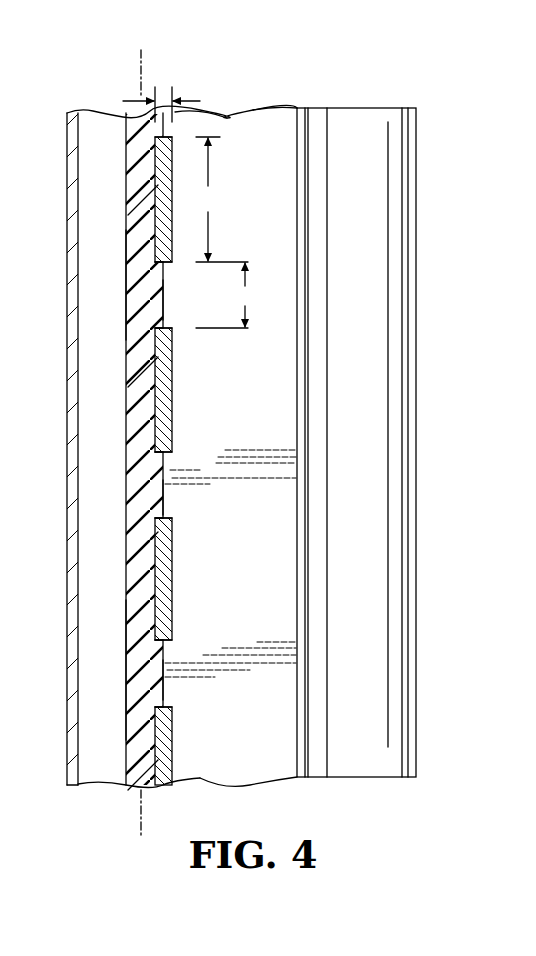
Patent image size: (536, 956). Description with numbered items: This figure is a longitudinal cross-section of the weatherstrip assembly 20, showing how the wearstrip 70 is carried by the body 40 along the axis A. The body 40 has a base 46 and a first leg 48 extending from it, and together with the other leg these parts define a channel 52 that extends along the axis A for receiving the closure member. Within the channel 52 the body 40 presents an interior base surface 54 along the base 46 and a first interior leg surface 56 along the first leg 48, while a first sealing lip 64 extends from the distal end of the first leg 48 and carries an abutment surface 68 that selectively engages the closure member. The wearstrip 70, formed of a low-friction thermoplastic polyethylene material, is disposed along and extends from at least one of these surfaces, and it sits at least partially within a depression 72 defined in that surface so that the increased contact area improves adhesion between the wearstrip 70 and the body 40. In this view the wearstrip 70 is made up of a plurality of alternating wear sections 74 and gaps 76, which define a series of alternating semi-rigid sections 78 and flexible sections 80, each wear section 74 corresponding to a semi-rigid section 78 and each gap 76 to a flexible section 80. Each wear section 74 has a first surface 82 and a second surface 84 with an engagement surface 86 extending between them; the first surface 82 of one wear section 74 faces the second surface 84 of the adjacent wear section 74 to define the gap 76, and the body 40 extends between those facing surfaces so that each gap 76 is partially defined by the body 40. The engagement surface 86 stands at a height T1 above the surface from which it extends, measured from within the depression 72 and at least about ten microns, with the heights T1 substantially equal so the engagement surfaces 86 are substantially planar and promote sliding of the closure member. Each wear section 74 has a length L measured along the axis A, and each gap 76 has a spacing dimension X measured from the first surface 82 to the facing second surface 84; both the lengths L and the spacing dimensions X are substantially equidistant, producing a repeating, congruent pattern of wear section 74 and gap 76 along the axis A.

The weatherstrip assembly 20 is at (389, 418).
The body 40 is at (120, 123).
The base 46 is at (120, 781).
The first leg 48 is at (280, 111).
The channel 52 is at (237, 131).
The interior base surface 54 is at (166, 473).
The first interior leg surface 56 is at (280, 768).
The first sealing lip 64 is at (367, 118).
The abutment surface 68 is at (367, 227).
The wearstrip 70 is at (134, 227).
The depression 72 is at (152, 130).
The wear section 74 is at (156, 236).
The gap 76 is at (180, 450).
The semi-rigid section 78 is at (149, 186).
The flexible section 80 is at (154, 298).
The first surface 82 is at (165, 264).
The second surface 84 is at (164, 136).
The engagement surface 86 is at (173, 240).
The axis A is at (143, 72).
The height T1 is at (195, 101).
The length L is at (222, 199).
The spacing dimension X is at (223, 295).